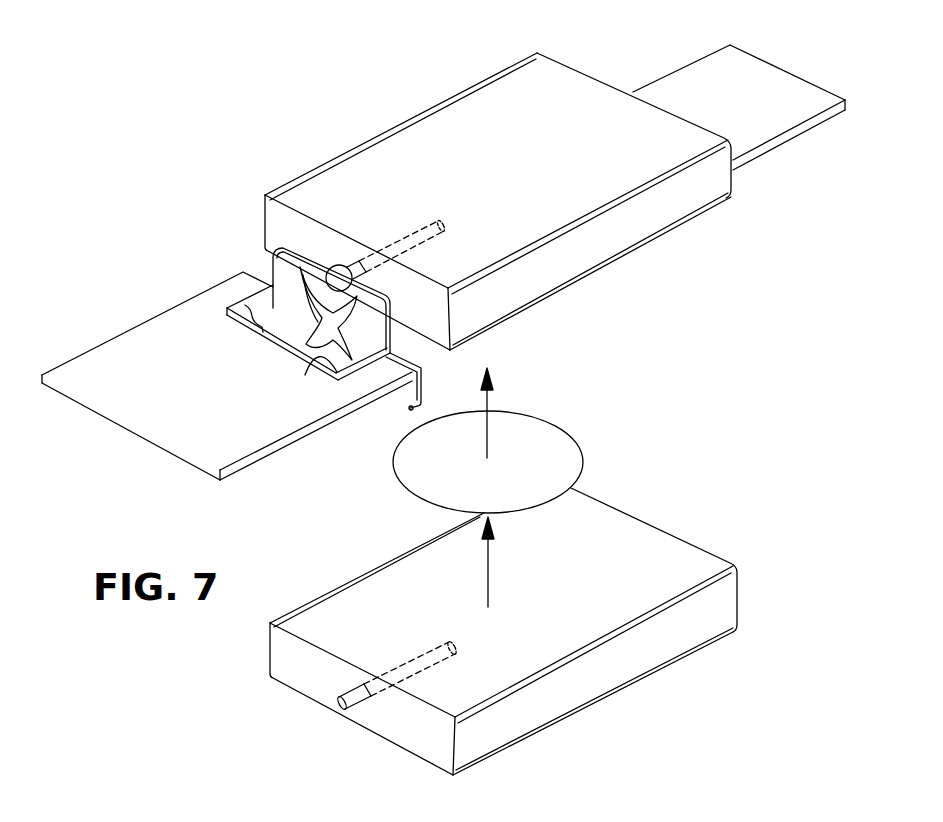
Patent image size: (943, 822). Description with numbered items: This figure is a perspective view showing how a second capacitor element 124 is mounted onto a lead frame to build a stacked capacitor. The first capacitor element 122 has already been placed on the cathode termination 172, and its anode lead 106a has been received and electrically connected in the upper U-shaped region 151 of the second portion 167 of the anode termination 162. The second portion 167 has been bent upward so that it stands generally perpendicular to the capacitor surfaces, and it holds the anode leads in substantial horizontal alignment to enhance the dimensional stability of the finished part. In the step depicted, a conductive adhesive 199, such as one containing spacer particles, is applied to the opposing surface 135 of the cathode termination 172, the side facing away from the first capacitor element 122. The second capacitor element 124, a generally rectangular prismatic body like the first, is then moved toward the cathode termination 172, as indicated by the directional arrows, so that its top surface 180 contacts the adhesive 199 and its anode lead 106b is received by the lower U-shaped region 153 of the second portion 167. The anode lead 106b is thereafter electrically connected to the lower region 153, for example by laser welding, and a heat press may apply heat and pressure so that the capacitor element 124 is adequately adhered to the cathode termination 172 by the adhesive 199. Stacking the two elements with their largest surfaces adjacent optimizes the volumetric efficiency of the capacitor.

The capacitor element 122 is at (554, 79).
The cathode termination 172 is at (763, 97).
The opposing surface 135 is at (776, 152).
The upper region 151 is at (342, 265).
The anode lead 106a is at (438, 222).
The anode termination 162 is at (138, 352).
The second portion 167 is at (285, 270).
The lower region 153 is at (320, 350).
The conductive adhesive 199 is at (542, 445).
The top surface 180 is at (626, 513).
The capacitor element 124 is at (505, 609).
The anode lead 106b is at (427, 662).